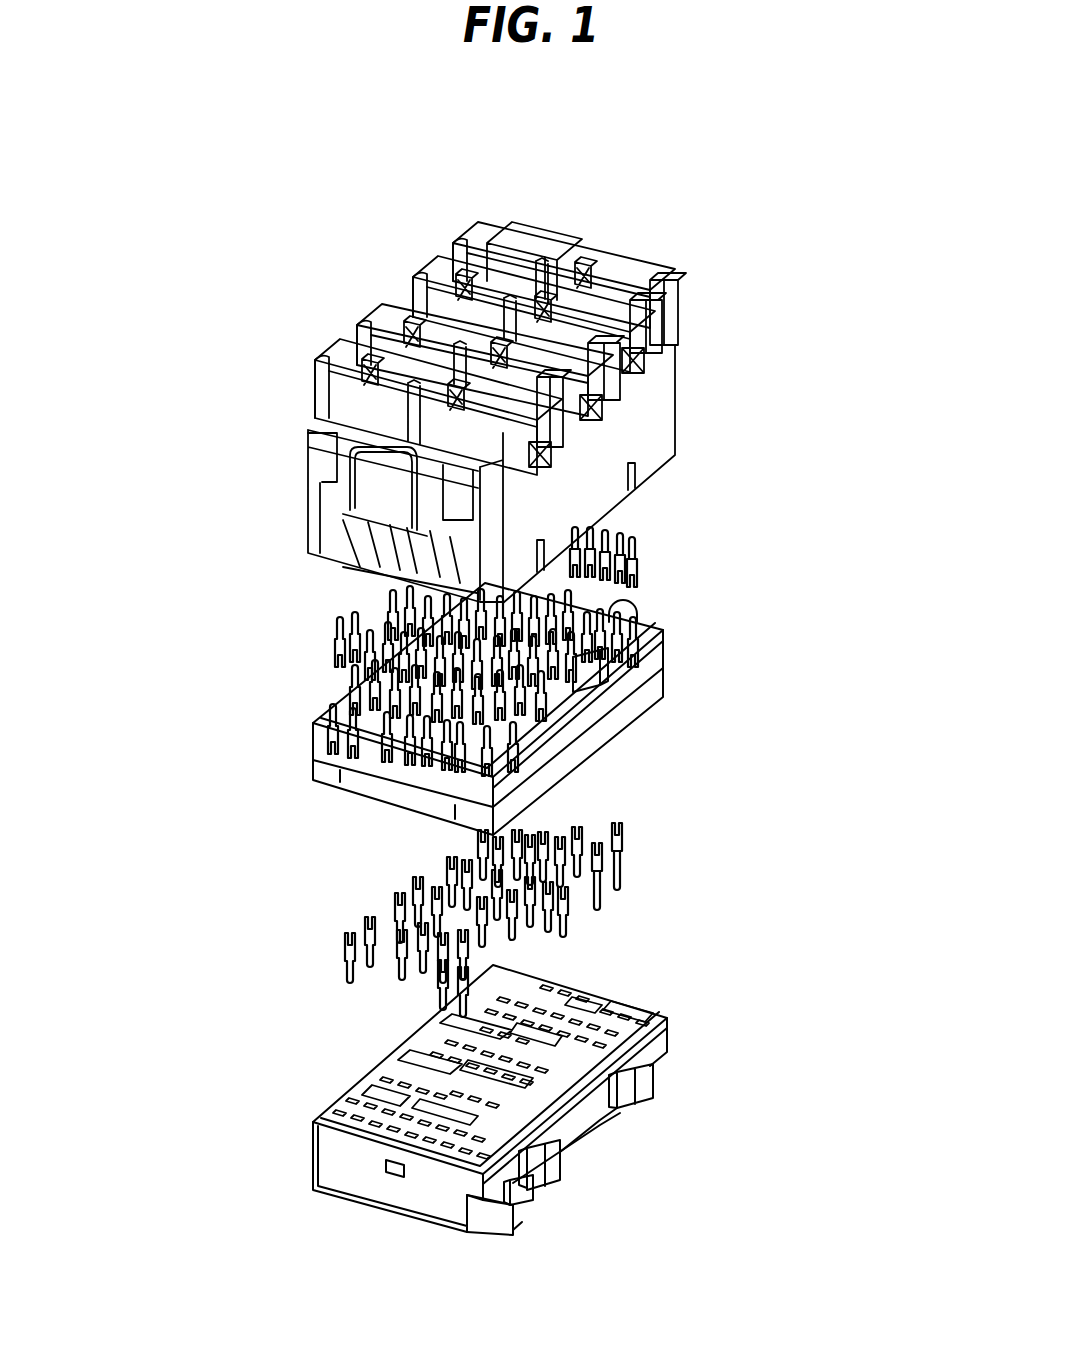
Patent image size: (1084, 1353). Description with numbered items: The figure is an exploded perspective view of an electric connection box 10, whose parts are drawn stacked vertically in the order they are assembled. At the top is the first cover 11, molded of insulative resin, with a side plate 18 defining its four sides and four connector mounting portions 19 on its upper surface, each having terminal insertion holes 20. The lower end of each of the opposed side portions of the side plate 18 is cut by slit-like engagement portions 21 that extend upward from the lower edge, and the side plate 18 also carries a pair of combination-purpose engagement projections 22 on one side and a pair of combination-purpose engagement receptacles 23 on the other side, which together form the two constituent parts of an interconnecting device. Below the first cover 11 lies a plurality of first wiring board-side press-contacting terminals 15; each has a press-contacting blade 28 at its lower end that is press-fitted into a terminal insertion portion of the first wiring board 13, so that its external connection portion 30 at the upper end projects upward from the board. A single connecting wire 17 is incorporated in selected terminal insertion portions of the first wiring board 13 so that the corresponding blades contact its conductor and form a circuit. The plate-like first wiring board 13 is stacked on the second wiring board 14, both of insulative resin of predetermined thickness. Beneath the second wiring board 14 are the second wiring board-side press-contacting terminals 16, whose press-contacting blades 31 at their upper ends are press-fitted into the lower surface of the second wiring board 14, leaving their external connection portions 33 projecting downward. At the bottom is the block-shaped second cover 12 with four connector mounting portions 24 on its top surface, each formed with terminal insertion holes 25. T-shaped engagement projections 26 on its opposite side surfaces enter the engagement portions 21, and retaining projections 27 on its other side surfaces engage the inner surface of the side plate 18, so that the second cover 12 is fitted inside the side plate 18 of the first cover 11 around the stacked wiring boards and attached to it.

The electric connection box 10 is at (658, 222).
The first cover 11 is at (308, 390).
The second cover 12 is at (311, 1145).
The first wiring board 13 is at (312, 740).
The second wiring board 14 is at (312, 770).
The first wiring board-side press-contacting terminals 15 is at (630, 558).
The second wiring board-side press-contacting terminals 16 is at (630, 857).
The connecting wire 17 is at (642, 606).
The side plate 18 is at (665, 398).
The connector mounting portions 19 is at (515, 258).
The terminal insertion holes 20 is at (612, 664).
The engagement portions 21 is at (634, 473).
The combination-purpose engagement projections 22 is at (648, 360).
The combination-purpose engagement receptacles 23 is at (460, 241).
The connector mounting portions 24 is at (520, 1197).
The terminal insertion holes 25 is at (452, 1152).
The engagement projections 26 is at (650, 1095).
The retaining projections 27 is at (390, 1178).
The press-contacting blades 28 is at (632, 582).
The external connection portions 30 is at (630, 528).
The press-contacting blades 31 is at (625, 827).
The external connection portions 33 is at (603, 887).